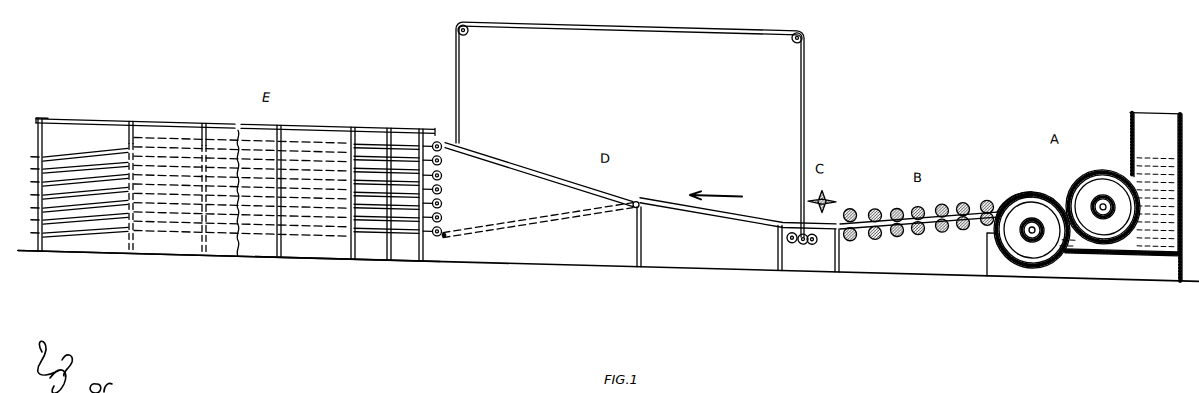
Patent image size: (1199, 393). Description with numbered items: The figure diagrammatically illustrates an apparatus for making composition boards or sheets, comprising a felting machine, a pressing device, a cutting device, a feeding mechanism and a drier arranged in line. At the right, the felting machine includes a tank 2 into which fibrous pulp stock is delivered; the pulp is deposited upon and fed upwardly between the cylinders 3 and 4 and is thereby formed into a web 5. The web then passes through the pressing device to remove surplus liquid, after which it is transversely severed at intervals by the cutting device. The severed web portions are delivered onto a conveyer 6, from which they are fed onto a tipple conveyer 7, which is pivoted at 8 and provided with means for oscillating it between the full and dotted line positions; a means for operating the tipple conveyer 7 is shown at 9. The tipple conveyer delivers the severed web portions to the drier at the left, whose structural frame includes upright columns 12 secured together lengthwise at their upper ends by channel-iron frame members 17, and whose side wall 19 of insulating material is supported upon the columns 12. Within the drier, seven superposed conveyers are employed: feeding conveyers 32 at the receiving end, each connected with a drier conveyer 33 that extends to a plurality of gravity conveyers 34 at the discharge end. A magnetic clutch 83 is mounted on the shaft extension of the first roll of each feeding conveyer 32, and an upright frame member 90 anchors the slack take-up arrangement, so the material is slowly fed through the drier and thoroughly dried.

The tank 2 is at (1158, 93).
The cylinder 3 is at (1103, 160).
The cylinder 4 is at (1031, 180).
The web 5 is at (1001, 181).
The conveyer 6 is at (701, 197).
The tipple conveyer 7 is at (517, 206).
The pivot 8 is at (636, 192).
The means for operating the tipple conveyer 9 is at (797, 222).
The upright columns 12 is at (37, 129).
The frame members 17 is at (318, 117).
The side wall 19 is at (292, 242).
The feeding conveyers 32 is at (410, 198).
The drier conveyers 33 is at (175, 157).
The gravity conveyers 34 is at (72, 176).
The magnetic clutch 83 is at (441, 164).
The upright frame member 90 is at (418, 120).